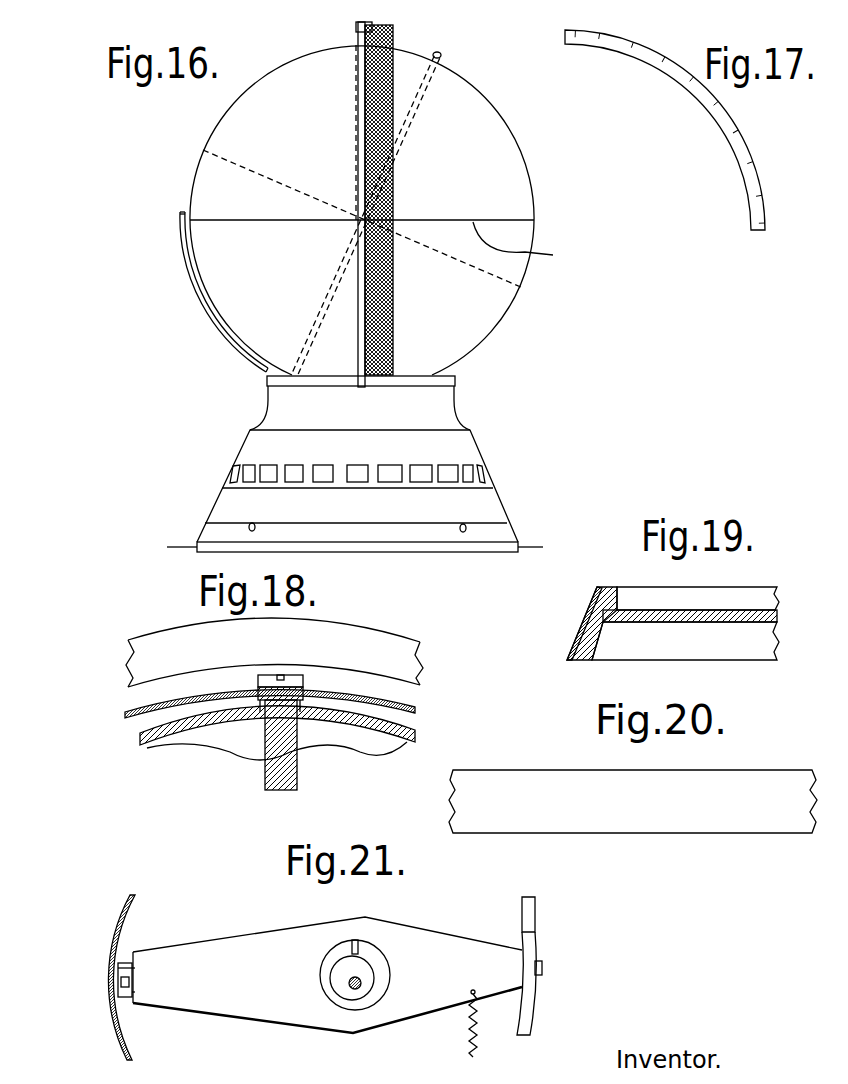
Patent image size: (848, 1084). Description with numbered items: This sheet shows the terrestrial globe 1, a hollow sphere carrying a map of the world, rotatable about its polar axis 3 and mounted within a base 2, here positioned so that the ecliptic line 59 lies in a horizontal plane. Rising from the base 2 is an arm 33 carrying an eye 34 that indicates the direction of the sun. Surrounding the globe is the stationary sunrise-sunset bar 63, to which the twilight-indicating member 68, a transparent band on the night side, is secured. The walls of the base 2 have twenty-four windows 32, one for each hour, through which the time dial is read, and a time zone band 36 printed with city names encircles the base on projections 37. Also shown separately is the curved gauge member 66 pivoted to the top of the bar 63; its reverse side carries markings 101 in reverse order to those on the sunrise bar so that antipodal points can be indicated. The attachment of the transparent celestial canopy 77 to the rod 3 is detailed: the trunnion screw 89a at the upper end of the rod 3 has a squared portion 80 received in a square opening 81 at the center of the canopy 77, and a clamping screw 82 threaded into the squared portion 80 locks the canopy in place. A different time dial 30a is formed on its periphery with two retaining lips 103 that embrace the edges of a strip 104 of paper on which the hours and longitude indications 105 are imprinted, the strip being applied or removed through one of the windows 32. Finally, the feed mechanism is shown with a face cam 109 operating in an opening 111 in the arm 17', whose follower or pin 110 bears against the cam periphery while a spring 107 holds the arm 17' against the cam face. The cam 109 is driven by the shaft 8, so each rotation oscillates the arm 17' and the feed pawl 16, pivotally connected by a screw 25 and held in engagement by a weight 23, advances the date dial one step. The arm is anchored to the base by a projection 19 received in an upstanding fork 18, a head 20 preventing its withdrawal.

In FIG. 16, the terrestrial globe 1 is at (507, 165).
In FIG. 18, the terrestrial globe 1 is at (142, 735).
In FIG. 16, the base 2 is at (462, 456).
In FIG. 21, the base 2 is at (117, 1035).
In FIG. 16, the polar axis 3 is at (407, 108).
In FIG. 18, the polar axis 3 is at (298, 778).
In FIG. 21, the shaft 8 is at (357, 987).
In FIG. 21, the feed pawl 16 is at (533, 1002).
In FIG. 21, the arm 17' is at (327, 991).
In FIG. 21, the upstanding fork 18 is at (120, 967).
In FIG. 21, the projection 19 is at (134, 975).
In FIG. 21, the head 20 is at (118, 983).
In FIG. 21, the weight 23 is at (532, 910).
In FIG. 21, the screw 25 is at (544, 965).
In FIG. 19, the time dial 30a is at (620, 590).
In FIG. 16, the windows 32 is at (422, 478).
In FIG. 16, the arm 33 is at (205, 318).
In FIG. 16, the eye 34 is at (180, 213).
In FIG. 16, the time zone band 36 is at (232, 498).
In FIG. 16, the projections 37 is at (248, 527).
In FIG. 16, the ecliptic line 59 is at (527, 245).
In FIG. 16, the sunrise-sunset bar 63 is at (361, 78).
In FIG. 18, the sunrise-sunset bar 63 is at (322, 638).
In FIG. 16, the gauge member 66 is at (356, 104).
In FIG. 17, the gauge member 66 is at (717, 122).
In FIG. 16, the twilight-indicating member 68 is at (388, 328).
In FIG. 18, the canopy 77 is at (133, 715).
In FIG. 18, the squared portion 80 is at (273, 693).
In FIG. 18, the square opening 81 is at (303, 688).
In FIG. 18, the clamping screw 82 is at (267, 675).
In FIG. 18, the trunnion screw 89a is at (263, 707).
In FIG. 17, the markings 101 is at (648, 50).
In FIG. 19, the retaining lips 103 is at (600, 590).
In FIG. 19, the strip 104 is at (590, 608).
In FIG. 20, the strip 104 is at (548, 780).
In FIG. 20, the longitude indications 105 is at (773, 830).
In FIG. 21, the spring 107 is at (468, 1042).
In FIG. 21, the face cam 109 is at (345, 978).
In FIG. 21, the follower or pin 110 is at (358, 948).
In FIG. 21, the opening 111 is at (335, 948).